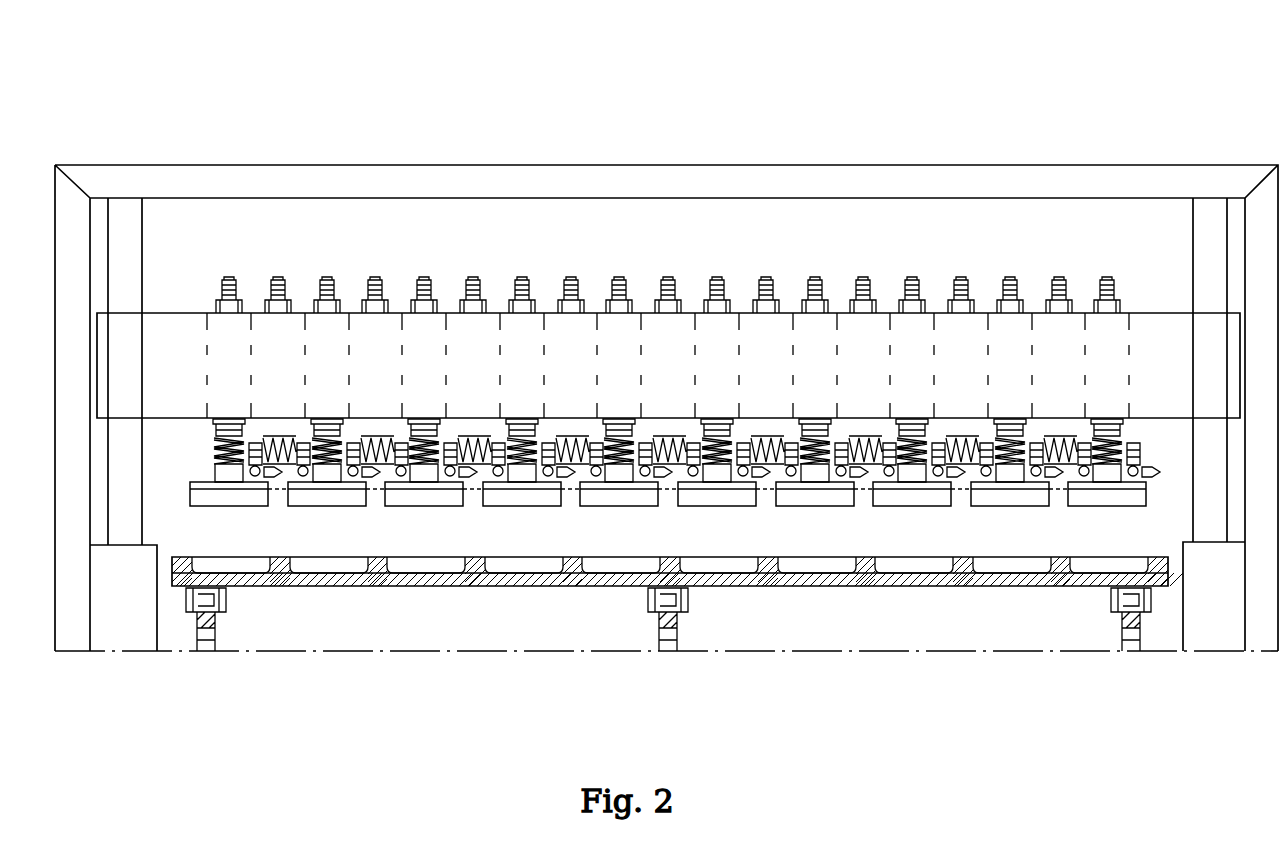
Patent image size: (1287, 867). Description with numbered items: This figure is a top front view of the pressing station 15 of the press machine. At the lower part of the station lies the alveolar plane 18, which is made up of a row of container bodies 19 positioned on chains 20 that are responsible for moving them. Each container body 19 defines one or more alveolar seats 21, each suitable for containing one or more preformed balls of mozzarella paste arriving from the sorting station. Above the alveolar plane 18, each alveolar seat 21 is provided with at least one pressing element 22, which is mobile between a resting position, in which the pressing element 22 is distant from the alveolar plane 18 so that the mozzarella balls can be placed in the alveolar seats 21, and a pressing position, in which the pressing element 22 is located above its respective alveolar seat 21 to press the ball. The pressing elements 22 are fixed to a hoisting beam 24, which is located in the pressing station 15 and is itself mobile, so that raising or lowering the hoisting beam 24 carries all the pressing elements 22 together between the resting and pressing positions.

The pressing station 15 is at (108, 118).
The alveolar plane 18 is at (677, 632).
The container bodies 19 is at (950, 586).
The chains 20 is at (1110, 608).
The alveolar seats 21 is at (1071, 568).
The pressing element 22 is at (1084, 268).
The hoisting beam 24 is at (1172, 350).